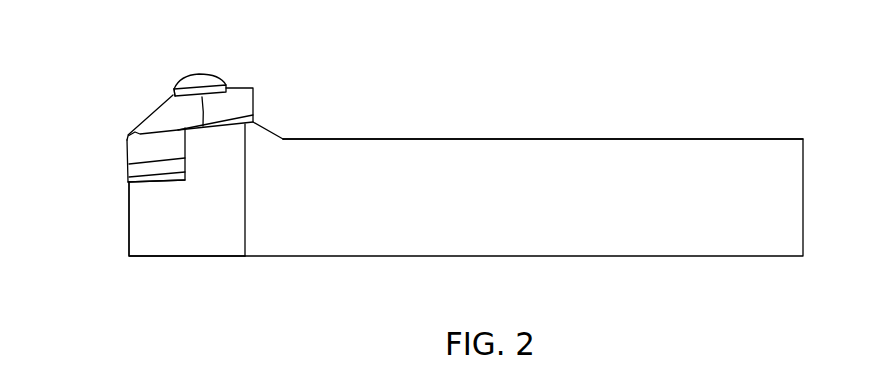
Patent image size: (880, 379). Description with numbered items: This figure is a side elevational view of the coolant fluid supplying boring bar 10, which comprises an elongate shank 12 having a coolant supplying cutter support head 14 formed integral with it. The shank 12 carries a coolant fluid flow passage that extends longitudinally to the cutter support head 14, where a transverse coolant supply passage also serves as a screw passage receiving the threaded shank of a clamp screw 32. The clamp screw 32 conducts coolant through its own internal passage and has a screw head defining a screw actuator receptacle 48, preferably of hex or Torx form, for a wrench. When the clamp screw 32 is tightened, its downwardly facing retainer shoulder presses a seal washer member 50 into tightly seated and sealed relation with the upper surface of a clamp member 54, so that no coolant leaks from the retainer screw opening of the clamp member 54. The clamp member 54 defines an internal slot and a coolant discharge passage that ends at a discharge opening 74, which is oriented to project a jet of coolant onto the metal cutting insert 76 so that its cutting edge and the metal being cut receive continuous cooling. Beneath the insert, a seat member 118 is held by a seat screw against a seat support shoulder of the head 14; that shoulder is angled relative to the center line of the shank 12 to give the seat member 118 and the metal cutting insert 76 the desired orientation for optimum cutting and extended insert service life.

The boring bar 10 is at (443, 131).
The elongate shank 12 is at (545, 138).
The coolant supplying cutter support head 14 is at (162, 228).
The clamp screw 32 is at (224, 78).
The screw actuator receptacle 48 is at (190, 75).
The seal washer member 50 is at (174, 90).
The clamp member 54 is at (251, 100).
The discharge opening 74 is at (170, 116).
The metal cutting insert 76 is at (147, 158).
The seat member 118 is at (131, 173).